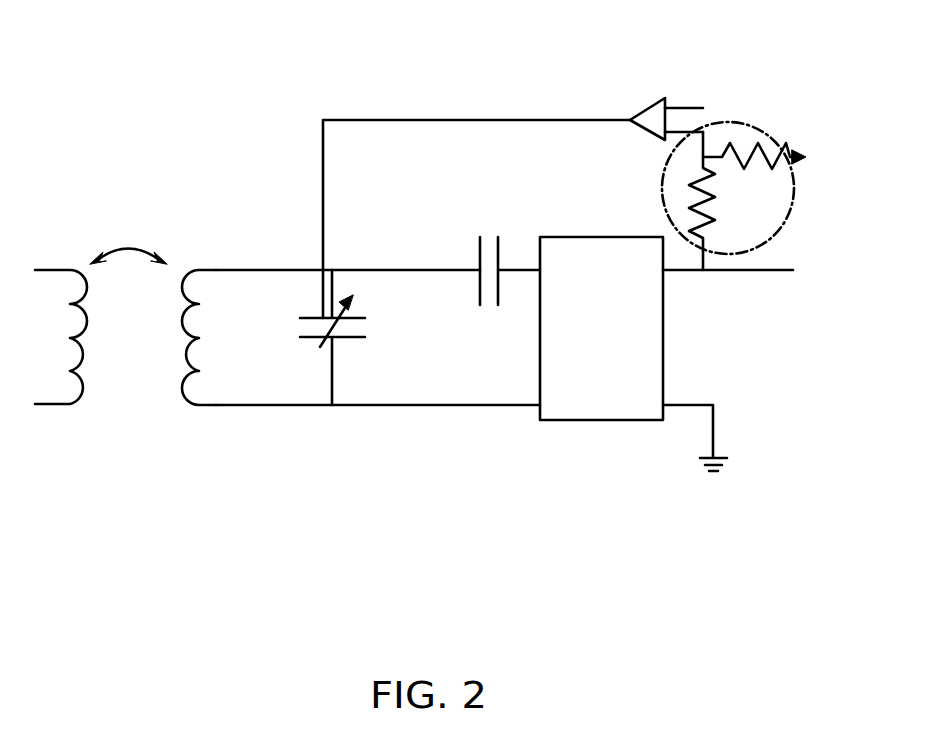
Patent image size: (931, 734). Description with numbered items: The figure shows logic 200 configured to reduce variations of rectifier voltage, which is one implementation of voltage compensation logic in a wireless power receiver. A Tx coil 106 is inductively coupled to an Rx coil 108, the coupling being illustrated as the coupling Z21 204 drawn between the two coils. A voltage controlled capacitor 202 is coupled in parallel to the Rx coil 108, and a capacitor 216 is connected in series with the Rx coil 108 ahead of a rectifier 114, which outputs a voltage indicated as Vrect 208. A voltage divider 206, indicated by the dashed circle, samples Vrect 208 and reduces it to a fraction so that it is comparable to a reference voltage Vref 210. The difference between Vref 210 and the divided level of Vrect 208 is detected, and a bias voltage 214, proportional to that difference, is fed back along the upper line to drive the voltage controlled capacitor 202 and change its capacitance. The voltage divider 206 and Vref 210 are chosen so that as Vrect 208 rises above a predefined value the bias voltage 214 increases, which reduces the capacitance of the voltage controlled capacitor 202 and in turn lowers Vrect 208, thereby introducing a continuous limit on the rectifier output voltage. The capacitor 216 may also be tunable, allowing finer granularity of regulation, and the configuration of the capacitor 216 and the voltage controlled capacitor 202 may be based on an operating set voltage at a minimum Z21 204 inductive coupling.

The Tx coil 106 is at (78, 373).
The Rx coil 108 is at (187, 378).
The rectifier 114 is at (562, 420).
The logic 200 is at (450, 664).
The voltage controlled capacitor 202 is at (308, 338).
The coupling Z21 204 is at (128, 205).
The voltage divider 206 is at (767, 138).
The Vrect 208 is at (650, 102).
The reference voltage Vref 210 is at (722, 64).
The bias voltage 214 is at (380, 118).
The capacitor 216 is at (478, 282).